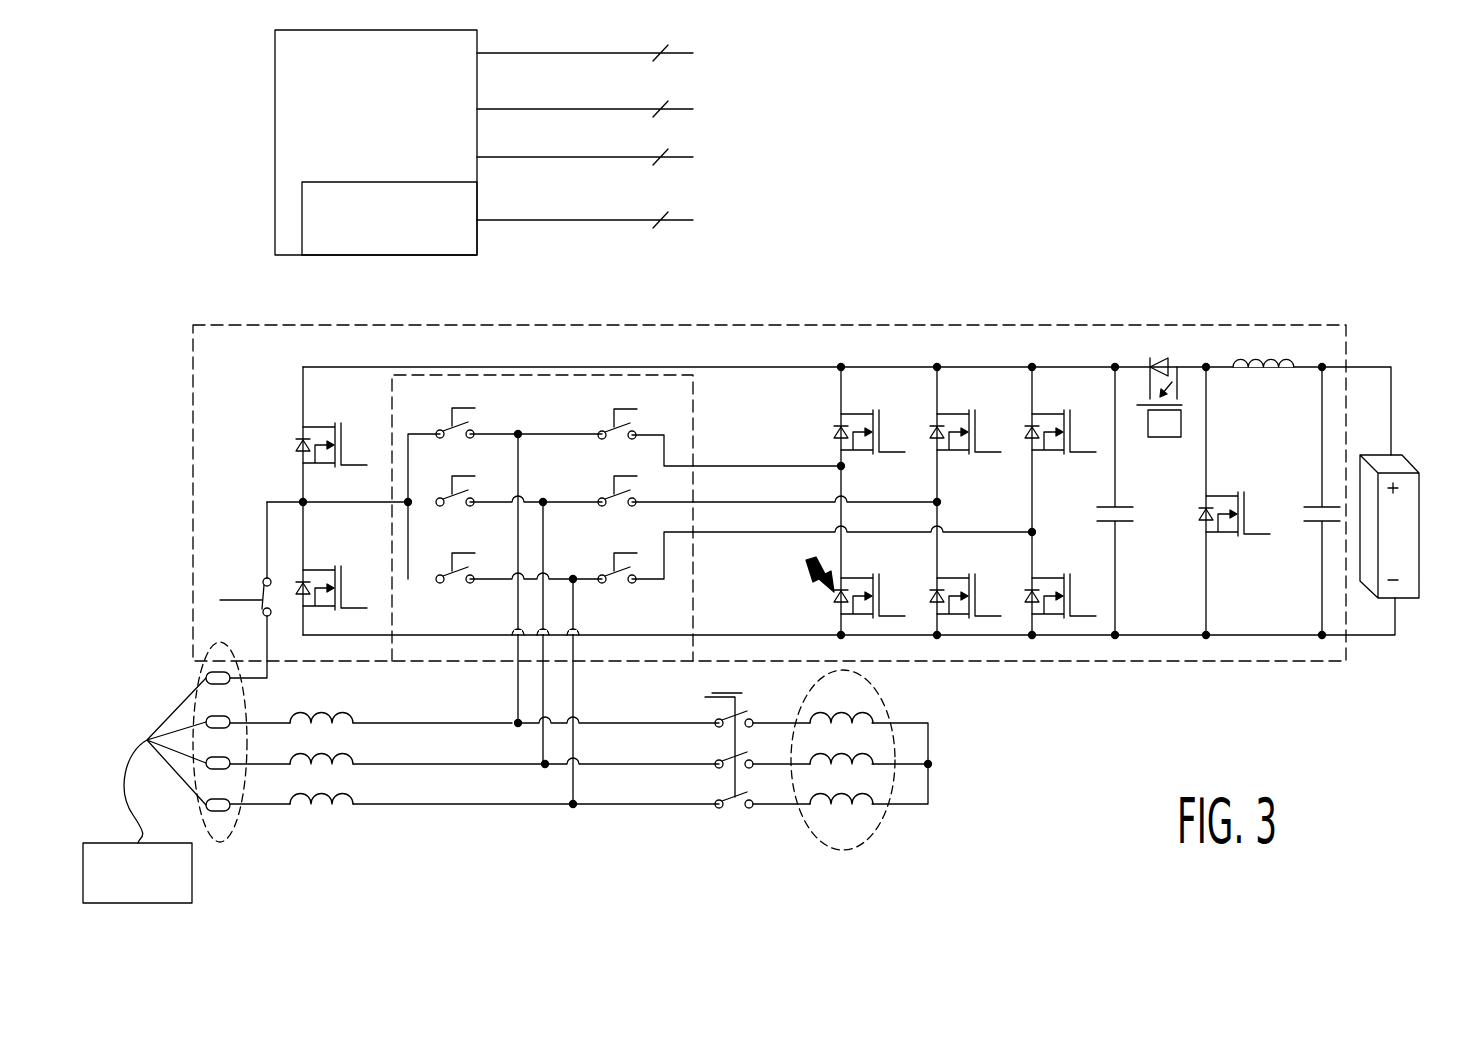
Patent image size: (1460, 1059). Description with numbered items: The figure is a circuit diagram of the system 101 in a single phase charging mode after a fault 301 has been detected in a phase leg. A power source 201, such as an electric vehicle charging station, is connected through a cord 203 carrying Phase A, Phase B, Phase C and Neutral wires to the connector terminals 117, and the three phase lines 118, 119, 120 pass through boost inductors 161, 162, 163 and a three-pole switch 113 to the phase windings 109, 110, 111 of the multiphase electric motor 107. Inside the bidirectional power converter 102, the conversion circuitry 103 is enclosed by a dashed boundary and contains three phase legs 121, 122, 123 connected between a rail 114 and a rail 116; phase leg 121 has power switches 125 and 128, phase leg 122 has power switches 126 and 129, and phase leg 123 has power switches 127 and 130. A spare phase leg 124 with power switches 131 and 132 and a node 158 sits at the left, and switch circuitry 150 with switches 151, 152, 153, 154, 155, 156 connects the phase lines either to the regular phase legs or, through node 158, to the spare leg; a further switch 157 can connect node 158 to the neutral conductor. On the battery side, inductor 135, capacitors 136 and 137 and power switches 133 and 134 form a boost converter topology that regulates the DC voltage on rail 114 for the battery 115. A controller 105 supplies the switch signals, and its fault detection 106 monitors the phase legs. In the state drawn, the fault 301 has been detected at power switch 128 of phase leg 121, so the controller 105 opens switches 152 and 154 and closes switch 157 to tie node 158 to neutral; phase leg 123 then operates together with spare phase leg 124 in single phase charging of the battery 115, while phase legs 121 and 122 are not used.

The system 101 is at (1256, 92).
The bidirectional power converter 102 is at (941, 216).
The conversion circuitry 103 is at (1125, 326).
The controller 105 is at (393, 136).
The fault detection 106 is at (459, 238).
The multiphase electric motor 107 is at (803, 824).
The phase winding 109 is at (868, 716).
The phase winding 110 is at (866, 756).
The phase winding 111 is at (848, 806).
The switch 113 is at (728, 792).
The rail 114 is at (657, 366).
The battery 115 is at (1408, 602).
The rail 116 is at (781, 633).
The connector terminals 117 is at (196, 682).
The line 118 is at (497, 720).
The line 119 is at (466, 762).
The line 120 is at (522, 806).
The phase leg 121 is at (842, 350).
The phase leg 122 is at (938, 350).
The phase leg 123 is at (1033, 350).
The spare phase leg 124 is at (304, 352).
The power switch 125 is at (850, 452).
The power switch 126 is at (947, 454).
The power switch 127 is at (1041, 454).
The power switch 128 is at (851, 578).
The power switch 129 is at (949, 578).
The power switch 130 is at (1043, 578).
The power switch 131 is at (316, 422).
The power switch 132 is at (316, 566).
The power switch 133 is at (1146, 426).
The power switch 134 is at (1222, 496).
The inductor 135 is at (1272, 356).
The capacitor 136 is at (1126, 525).
The capacitor 137 is at (1315, 525).
The switch circuitry 150 is at (696, 408).
The switch 151 is at (468, 426).
The switch 152 is at (628, 424).
The switch 153 is at (464, 497).
The switch 154 is at (598, 493).
The switch 155 is at (460, 586).
The switch 156 is at (612, 586).
The switch 157 is at (260, 580).
The node 158 is at (298, 500).
The boost inductor 161 is at (312, 727).
The boost inductor 162 is at (312, 767).
The boost inductor 163 is at (322, 807).
The power source 201 is at (192, 858).
The cord 203 is at (146, 740).
The fault 301 is at (804, 568).